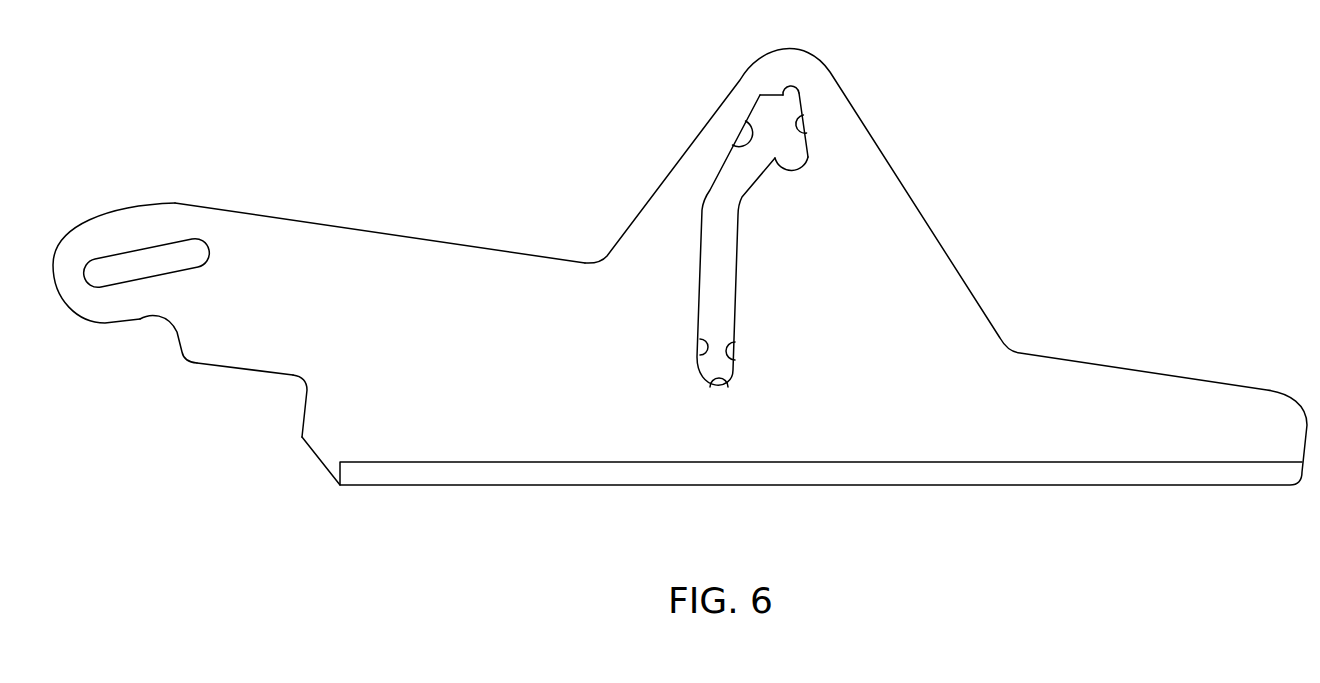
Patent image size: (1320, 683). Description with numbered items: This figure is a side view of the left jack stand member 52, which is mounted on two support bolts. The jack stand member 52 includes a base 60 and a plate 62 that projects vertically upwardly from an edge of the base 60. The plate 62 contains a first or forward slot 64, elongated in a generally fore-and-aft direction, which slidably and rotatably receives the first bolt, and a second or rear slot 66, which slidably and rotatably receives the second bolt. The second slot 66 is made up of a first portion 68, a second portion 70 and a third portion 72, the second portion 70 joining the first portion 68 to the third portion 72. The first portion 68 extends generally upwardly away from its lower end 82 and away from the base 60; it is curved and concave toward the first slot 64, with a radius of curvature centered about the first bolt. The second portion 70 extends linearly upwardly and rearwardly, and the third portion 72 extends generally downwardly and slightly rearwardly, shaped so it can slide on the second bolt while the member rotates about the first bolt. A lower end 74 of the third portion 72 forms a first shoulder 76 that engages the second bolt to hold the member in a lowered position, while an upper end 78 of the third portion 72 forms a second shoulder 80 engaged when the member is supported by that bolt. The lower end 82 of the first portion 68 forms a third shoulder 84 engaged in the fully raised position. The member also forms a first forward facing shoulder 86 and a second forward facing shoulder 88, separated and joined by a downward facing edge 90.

The left jack stand member 52 is at (1060, 242).
The base 60 is at (960, 473).
The plate 62 is at (467, 303).
The first slot 64 is at (118, 295).
The second slot 66 is at (747, 300).
The first portion 68 is at (702, 342).
The second portion 70 is at (748, 125).
The third portion 72 is at (805, 131).
The lower end 74 is at (806, 157).
The first shoulder 76 is at (809, 174).
The upper end 78 is at (778, 95).
The second shoulder 80 is at (800, 95).
The lower end 82 is at (740, 343).
The third shoulder 84 is at (728, 387).
The first forward facing shoulder 86 is at (173, 344).
The second forward facing shoulder 88 is at (302, 417).
The downward facing edge 90 is at (226, 367).